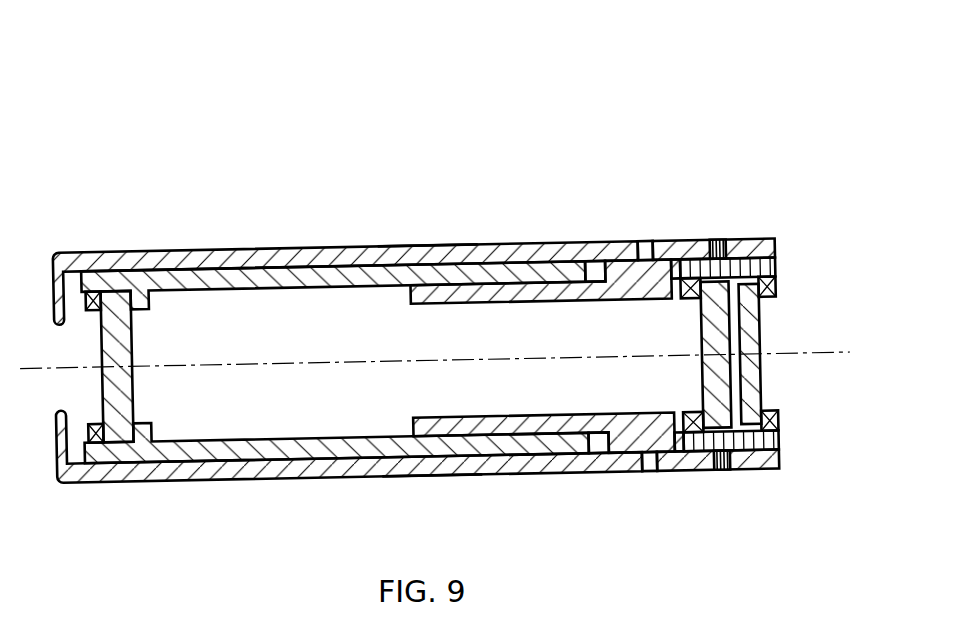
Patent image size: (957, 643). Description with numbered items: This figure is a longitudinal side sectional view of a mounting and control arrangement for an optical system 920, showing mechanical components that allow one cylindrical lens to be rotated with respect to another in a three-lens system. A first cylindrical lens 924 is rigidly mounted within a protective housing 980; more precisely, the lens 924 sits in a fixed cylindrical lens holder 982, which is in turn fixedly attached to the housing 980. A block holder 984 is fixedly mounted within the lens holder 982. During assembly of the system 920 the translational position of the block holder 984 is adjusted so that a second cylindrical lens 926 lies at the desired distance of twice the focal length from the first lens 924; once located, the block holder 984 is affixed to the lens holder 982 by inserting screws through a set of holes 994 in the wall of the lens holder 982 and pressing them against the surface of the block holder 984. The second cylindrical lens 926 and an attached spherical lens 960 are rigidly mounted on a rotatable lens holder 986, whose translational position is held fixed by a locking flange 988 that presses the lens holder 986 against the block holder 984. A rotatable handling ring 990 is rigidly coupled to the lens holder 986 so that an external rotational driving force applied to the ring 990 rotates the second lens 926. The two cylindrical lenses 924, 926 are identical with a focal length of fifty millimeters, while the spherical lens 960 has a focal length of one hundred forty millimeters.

The optical system 920 is at (647, 127).
The first cylindrical lens 924 is at (150, 425).
The second cylindrical lens 926 is at (702, 385).
The spherical lens 960 is at (762, 390).
The protective housing 980 is at (200, 480).
The fixed cylindrical lens holder 982 is at (255, 448).
The block holder 984 is at (563, 425).
The rotatable lens holder 986 is at (672, 240).
The locking flange 988 is at (718, 240).
The rotatable handling ring 990 is at (753, 240).
The holes 994 is at (432, 247).